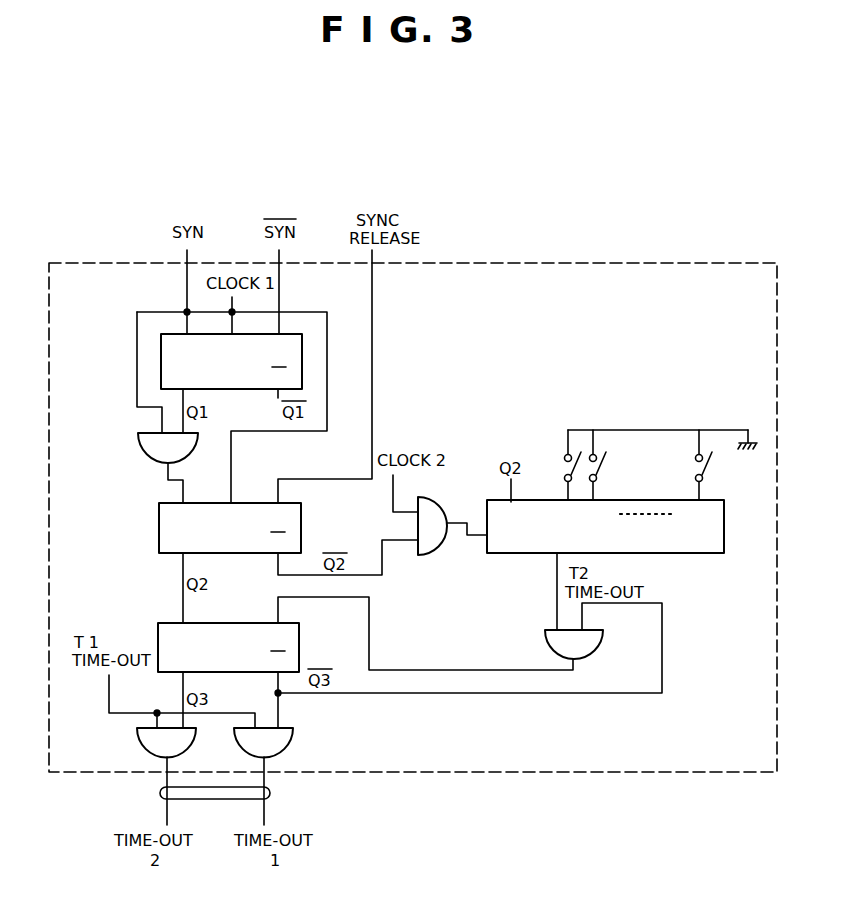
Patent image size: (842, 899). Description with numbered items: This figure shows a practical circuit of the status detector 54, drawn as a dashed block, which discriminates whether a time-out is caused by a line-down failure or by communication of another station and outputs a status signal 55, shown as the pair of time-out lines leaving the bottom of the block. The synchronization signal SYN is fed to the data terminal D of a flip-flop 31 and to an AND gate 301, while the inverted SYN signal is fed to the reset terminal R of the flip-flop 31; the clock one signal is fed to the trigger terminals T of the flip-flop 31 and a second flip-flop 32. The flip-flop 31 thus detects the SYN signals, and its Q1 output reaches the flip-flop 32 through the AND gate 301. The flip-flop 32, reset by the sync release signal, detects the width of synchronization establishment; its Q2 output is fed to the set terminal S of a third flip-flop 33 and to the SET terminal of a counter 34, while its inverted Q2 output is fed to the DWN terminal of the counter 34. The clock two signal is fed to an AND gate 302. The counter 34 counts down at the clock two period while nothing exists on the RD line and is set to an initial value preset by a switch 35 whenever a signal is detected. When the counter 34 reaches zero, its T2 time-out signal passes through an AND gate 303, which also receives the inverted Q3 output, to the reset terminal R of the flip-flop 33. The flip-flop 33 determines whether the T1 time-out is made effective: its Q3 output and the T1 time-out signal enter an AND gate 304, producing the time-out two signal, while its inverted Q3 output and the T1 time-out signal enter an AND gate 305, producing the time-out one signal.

The flip-flop 31 is at (302, 363).
The flip-flop 32 is at (301, 525).
The flip-flop 33 is at (299, 642).
The counter 34 is at (703, 553).
The switch 35 is at (623, 450).
The status detector 54 is at (736, 286).
The status signal 55 is at (270, 797).
The AND gate 301 is at (197, 447).
The AND gate 302 is at (436, 556).
The AND gate 303 is at (601, 645).
The AND gate 304 is at (215, 749).
The AND gate 305 is at (292, 740).